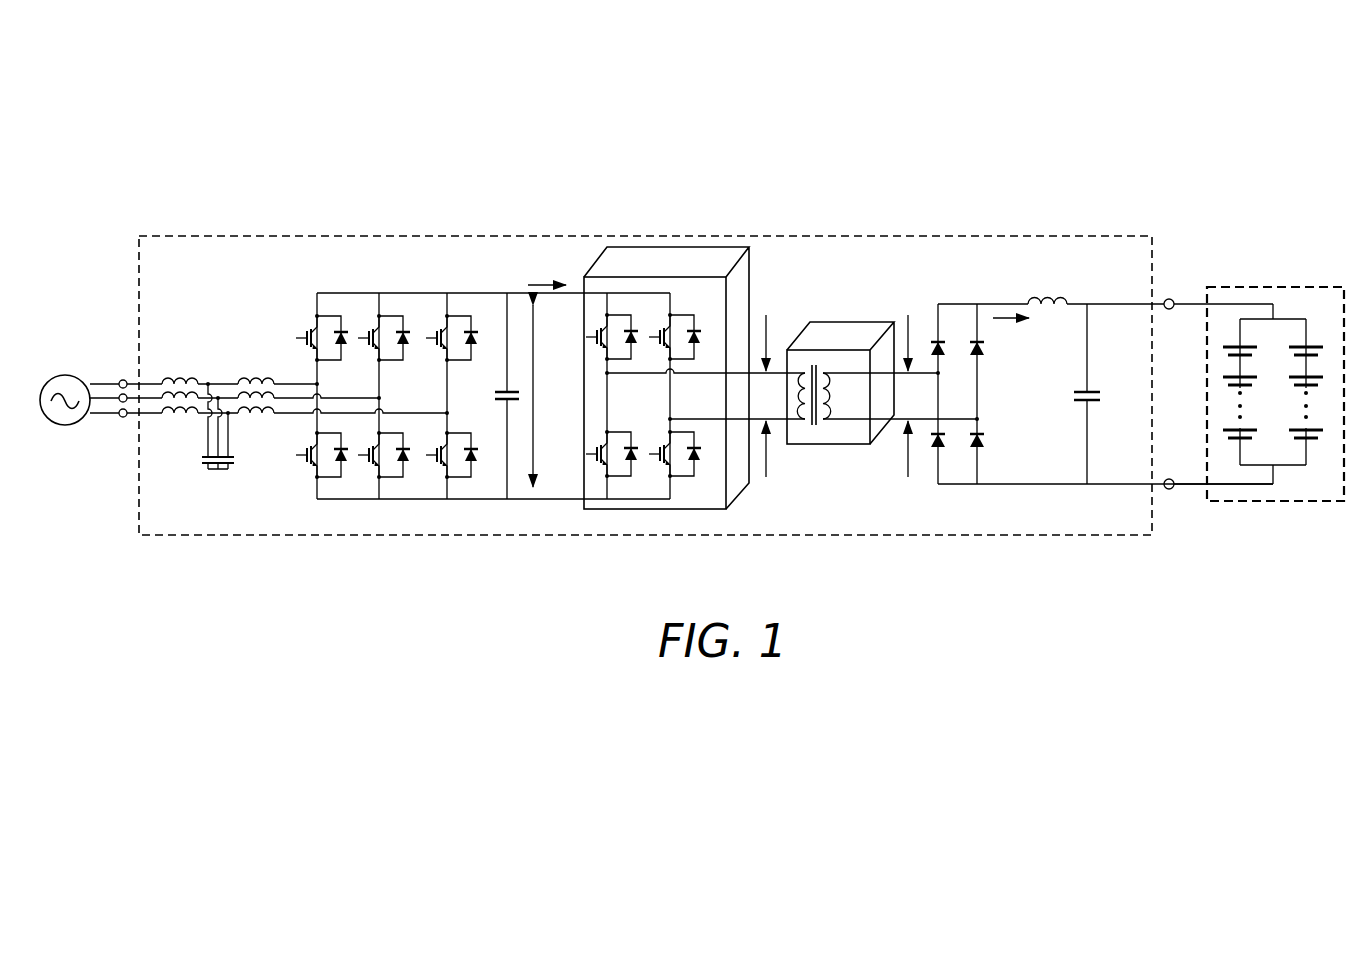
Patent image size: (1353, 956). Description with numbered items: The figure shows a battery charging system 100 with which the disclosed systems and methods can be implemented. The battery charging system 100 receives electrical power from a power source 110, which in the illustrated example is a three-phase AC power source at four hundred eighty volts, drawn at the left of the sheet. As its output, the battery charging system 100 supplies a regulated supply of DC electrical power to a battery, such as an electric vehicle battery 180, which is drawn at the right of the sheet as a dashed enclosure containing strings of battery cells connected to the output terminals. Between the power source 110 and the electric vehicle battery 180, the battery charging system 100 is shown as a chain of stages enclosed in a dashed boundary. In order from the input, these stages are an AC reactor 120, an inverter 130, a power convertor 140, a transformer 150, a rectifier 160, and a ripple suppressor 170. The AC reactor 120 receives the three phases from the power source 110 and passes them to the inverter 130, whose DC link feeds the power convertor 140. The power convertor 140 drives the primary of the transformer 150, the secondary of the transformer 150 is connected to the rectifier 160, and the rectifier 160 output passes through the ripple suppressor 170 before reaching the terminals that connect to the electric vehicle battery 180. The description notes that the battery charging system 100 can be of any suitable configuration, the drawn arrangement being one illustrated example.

The battery charging system 100 is at (1282, 145).
The power source 110 is at (70, 459).
The AC reactor 120 is at (218, 337).
The inverter 130 is at (370, 265).
The power convertor 140 is at (645, 242).
The transformer 150 is at (843, 305).
The rectifier 160 is at (957, 272).
The ripple suppressor 170 is at (1048, 272).
The electric vehicle battery 180 is at (1278, 276).